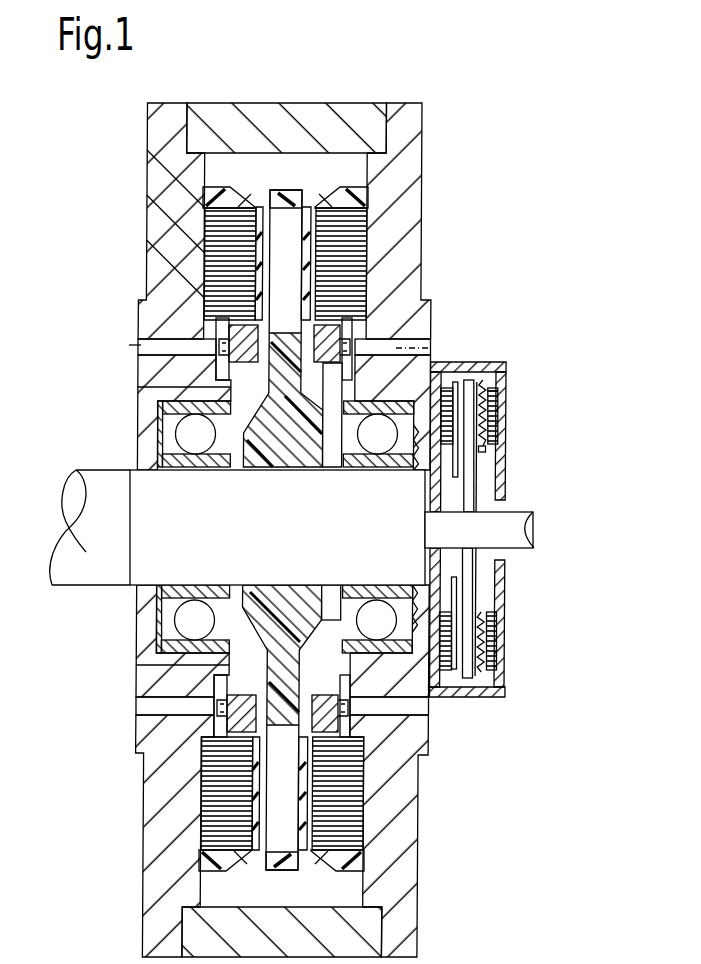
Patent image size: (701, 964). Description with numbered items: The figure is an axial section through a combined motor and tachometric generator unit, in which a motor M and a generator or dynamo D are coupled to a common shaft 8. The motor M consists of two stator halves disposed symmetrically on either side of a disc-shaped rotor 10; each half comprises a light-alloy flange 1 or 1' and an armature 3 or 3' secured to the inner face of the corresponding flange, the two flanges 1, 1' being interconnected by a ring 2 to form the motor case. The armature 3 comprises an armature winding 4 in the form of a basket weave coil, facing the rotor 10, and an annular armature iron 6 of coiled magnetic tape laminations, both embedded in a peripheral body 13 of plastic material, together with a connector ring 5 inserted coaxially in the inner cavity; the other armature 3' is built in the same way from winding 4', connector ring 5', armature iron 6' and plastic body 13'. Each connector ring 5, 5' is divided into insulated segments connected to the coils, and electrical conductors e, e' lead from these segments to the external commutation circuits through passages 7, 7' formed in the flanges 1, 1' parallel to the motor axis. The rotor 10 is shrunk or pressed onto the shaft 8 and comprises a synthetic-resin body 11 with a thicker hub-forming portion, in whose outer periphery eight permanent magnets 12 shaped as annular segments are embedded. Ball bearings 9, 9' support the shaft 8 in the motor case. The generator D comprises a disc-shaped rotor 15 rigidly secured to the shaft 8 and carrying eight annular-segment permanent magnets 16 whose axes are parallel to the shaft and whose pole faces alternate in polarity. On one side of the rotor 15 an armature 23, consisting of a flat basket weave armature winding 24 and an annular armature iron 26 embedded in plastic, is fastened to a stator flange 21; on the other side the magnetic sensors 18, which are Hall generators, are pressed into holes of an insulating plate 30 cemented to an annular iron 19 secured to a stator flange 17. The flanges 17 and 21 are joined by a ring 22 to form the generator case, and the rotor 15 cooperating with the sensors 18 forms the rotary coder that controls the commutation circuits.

The light-alloy flange 1 is at (222, 527).
The light-alloy flange 1' is at (390, 485).
The ring 2 is at (303, 117).
The armature 3 is at (156, 258).
The armature 3' is at (413, 257).
The armature winding 4 is at (144, 510).
The peripheral body of plastic material 13 is at (213, 529).
The armature winding 4' is at (428, 507).
The peripheral body of plastic material 13' is at (353, 529).
The connector ring 5 is at (157, 511).
The connector ring 5' is at (411, 508).
The annular armature iron 6 is at (160, 528).
The annular armature iron 6' is at (404, 528).
The passage 7 is at (136, 527).
The passage 7' is at (475, 488).
The electrical conductors e is at (91, 349).
The electrical conductors e' is at (452, 351).
The shaft 8 is at (90, 557).
The ball bearing 9 is at (238, 527).
The ball bearing 9' is at (415, 682).
The rotor 10 is at (288, 197).
The body of synthetic resin 11 is at (268, 640).
The permanent magnets 12 is at (205, 768).
The rotor 15 is at (490, 505).
The permanent magnets 16 is at (447, 384).
The stator flange 17 is at (468, 487).
The magnetic sensors 18 is at (495, 400).
The annular iron 19 is at (478, 474).
The stator flange 21 is at (507, 574).
The ring 22 is at (498, 700).
The armature 23 is at (500, 420).
The armature winding 24 is at (500, 412).
The annular armature iron 26 is at (498, 391).
The insulating plate 30 is at (498, 362).
The motor M is at (195, 100).
The generator D is at (496, 734).